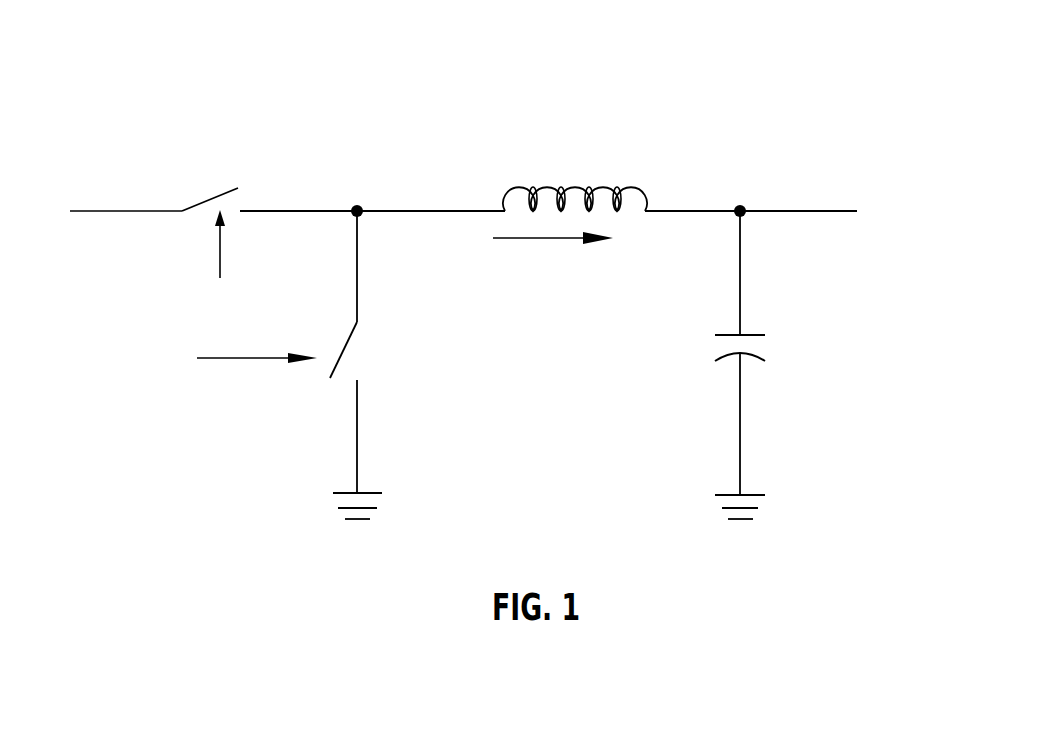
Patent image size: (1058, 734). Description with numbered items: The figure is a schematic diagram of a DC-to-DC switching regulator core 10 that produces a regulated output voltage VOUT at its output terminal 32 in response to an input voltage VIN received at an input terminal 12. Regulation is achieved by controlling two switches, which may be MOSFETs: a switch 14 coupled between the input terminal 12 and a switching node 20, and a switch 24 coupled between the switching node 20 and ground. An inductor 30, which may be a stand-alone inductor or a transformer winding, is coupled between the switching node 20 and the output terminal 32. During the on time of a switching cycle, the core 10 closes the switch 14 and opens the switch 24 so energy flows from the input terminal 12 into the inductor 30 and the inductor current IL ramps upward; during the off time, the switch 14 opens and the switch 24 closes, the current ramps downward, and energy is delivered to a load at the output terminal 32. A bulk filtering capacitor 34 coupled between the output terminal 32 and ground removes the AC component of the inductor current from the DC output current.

The DC-to-DC switching regulator core 10 is at (853, 101).
The input terminal 12 is at (110, 177).
The switch 14 is at (193, 175).
The switching node 20 is at (372, 188).
The switch 24 is at (300, 352).
The inductor 30 is at (570, 174).
The output terminal 32 is at (751, 190).
The capacitor 34 is at (703, 353).